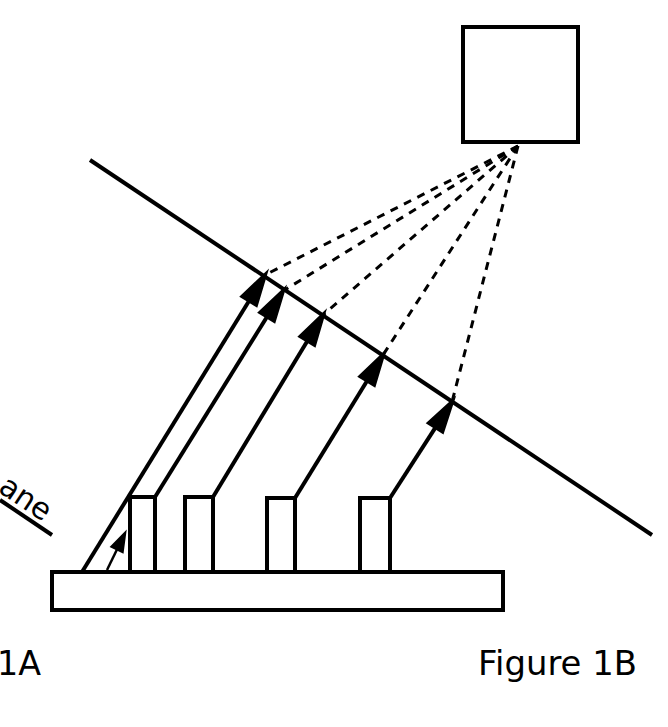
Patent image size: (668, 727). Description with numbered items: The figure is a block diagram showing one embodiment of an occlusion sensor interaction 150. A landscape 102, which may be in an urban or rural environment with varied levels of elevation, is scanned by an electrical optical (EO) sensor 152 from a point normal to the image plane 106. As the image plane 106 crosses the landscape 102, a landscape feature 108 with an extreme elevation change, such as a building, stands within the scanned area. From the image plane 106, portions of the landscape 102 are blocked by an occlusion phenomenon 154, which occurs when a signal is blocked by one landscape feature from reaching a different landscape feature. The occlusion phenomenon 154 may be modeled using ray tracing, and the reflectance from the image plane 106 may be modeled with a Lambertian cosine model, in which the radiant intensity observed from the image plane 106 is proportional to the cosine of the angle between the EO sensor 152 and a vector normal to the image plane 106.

The landscape 102 is at (378, 604).
The image plane 106 is at (518, 478).
The landscape feature 108 is at (148, 497).
The occlusion sensor interaction 150 is at (562, 645).
The electrical optical (EO) sensor 152 is at (547, 132).
The occlusion phenomenon 154 is at (226, 378).